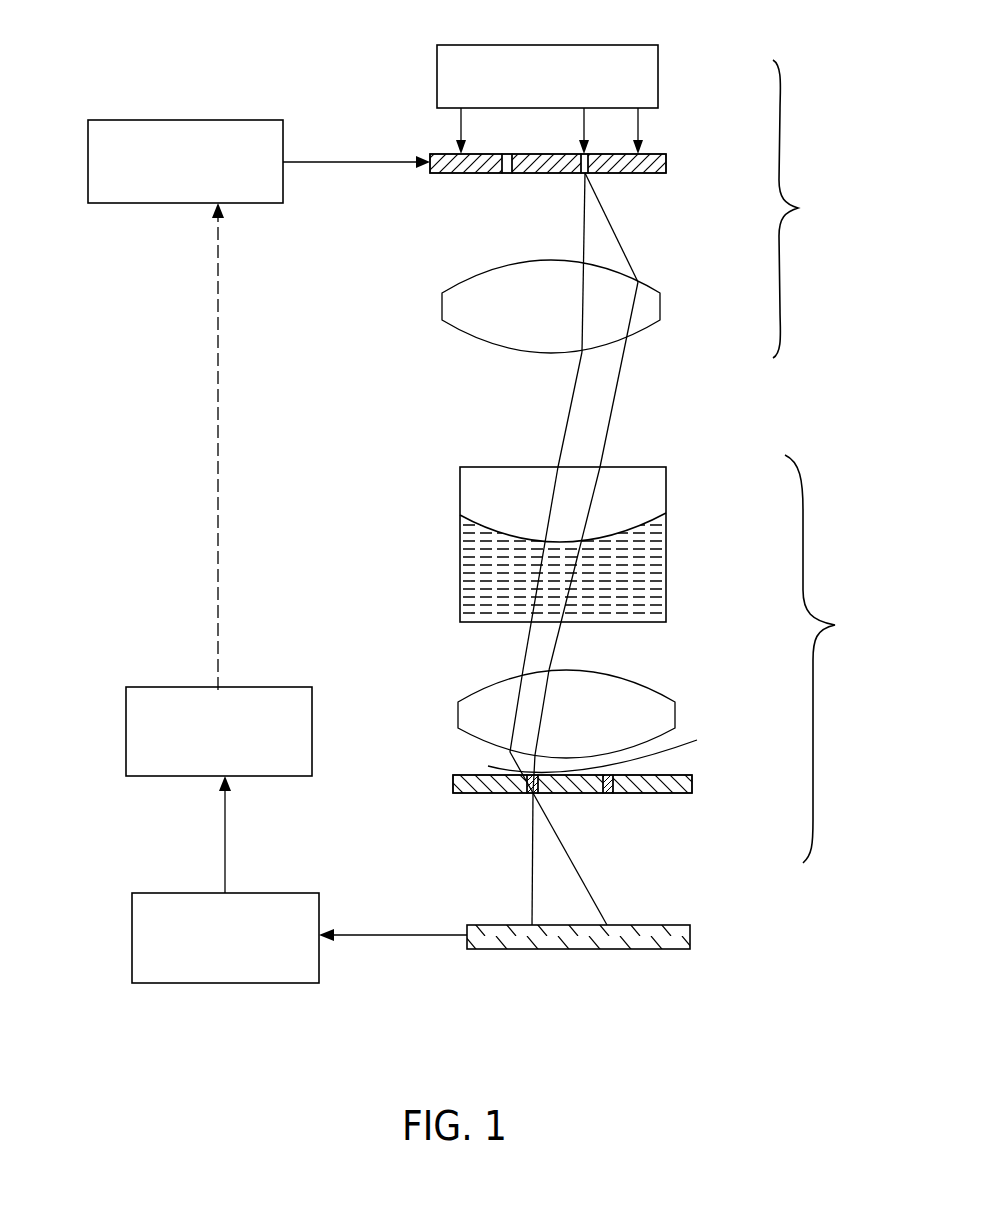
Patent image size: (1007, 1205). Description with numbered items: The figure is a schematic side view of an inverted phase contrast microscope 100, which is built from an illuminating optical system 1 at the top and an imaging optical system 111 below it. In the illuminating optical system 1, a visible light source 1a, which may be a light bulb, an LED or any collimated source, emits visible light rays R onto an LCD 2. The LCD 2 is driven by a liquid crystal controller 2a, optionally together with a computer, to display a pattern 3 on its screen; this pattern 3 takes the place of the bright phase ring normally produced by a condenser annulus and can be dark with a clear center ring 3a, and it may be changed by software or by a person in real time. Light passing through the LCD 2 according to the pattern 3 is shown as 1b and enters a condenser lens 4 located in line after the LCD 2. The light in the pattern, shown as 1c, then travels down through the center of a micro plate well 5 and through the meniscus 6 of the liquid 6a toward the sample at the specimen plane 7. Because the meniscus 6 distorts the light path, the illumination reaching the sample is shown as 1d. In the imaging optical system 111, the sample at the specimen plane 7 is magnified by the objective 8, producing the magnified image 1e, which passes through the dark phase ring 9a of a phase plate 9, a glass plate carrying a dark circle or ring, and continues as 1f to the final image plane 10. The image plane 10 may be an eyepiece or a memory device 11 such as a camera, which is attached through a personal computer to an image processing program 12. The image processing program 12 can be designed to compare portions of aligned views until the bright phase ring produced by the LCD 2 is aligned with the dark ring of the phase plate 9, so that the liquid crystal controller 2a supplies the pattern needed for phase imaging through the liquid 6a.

The phase contrast microscope 100 is at (118, 374).
The illuminating optical system 1 is at (799, 209).
The visible light source 1a is at (437, 80).
The visible light rays R is at (455, 130).
The LCD 2 is at (667, 163).
The liquid crystal controller 2a is at (178, 196).
The pattern 3 is at (535, 185).
The clear center ring 3a is at (508, 171).
The light passing through the LCD 1b is at (582, 227).
The condenser lens 4 is at (478, 300).
The light path from the bright phase ring 1c is at (571, 397).
The micro plate well 5 is at (460, 593).
The meniscus 6 is at (502, 532).
The liquid 6a is at (478, 542).
The specimen plane 7 is at (550, 623).
The distorted light path 1d is at (528, 640).
The objective 8 is at (480, 722).
The magnified image 1e is at (513, 763).
The phase plate 9 is at (692, 784).
The dark phase ring 9a is at (608, 793).
The light to the final image plane 1f is at (531, 842).
The image plane 10 is at (690, 935).
The memory device 11 is at (160, 945).
The image processing program 12 is at (145, 750).
The imaging optical system 111 is at (829, 659).